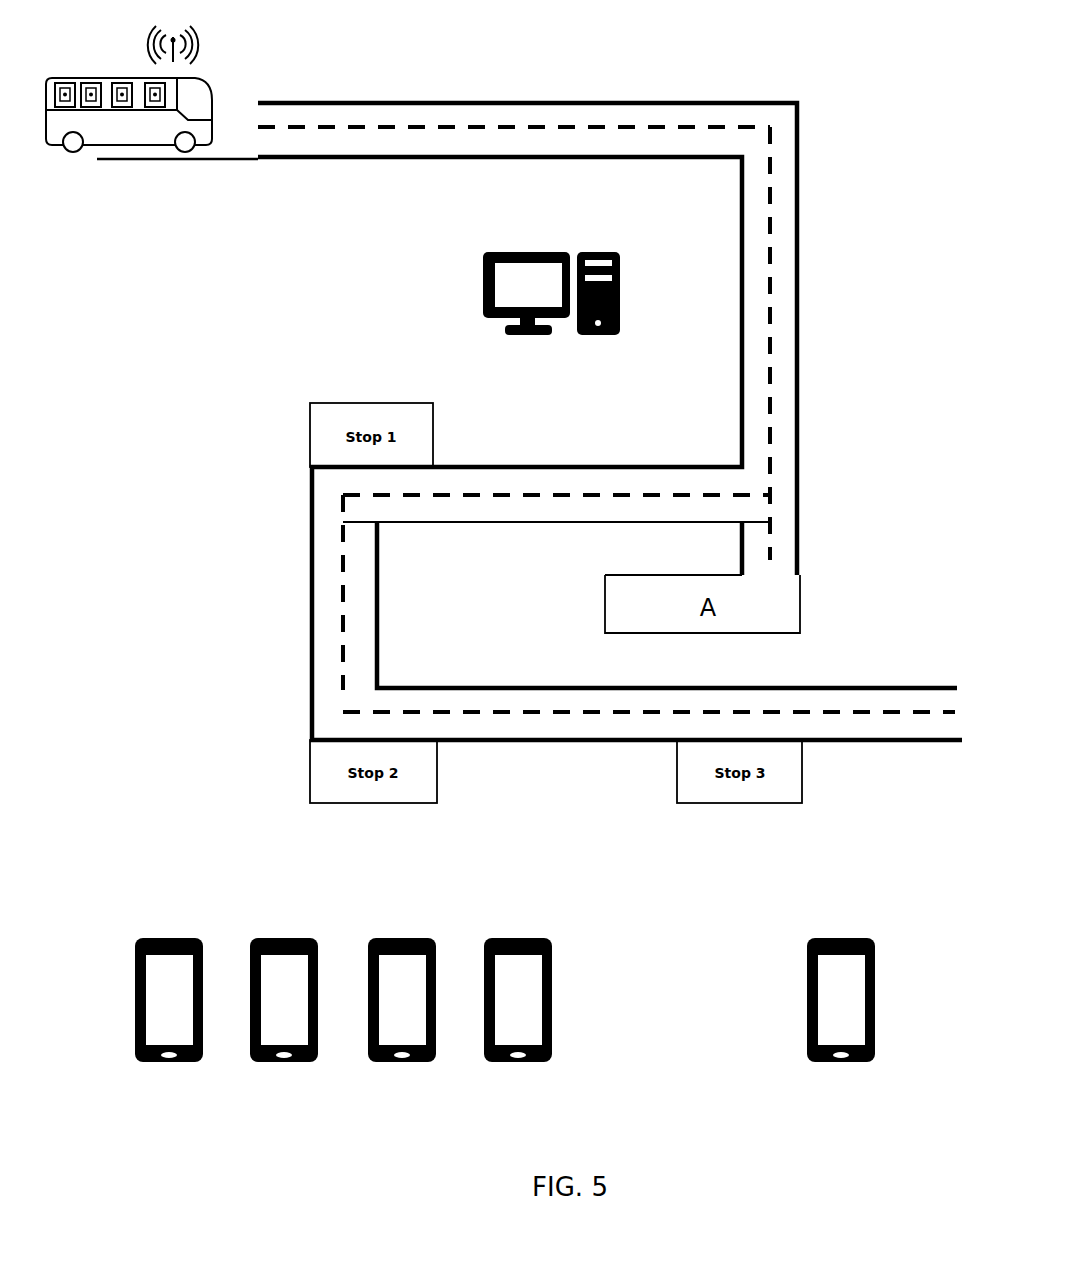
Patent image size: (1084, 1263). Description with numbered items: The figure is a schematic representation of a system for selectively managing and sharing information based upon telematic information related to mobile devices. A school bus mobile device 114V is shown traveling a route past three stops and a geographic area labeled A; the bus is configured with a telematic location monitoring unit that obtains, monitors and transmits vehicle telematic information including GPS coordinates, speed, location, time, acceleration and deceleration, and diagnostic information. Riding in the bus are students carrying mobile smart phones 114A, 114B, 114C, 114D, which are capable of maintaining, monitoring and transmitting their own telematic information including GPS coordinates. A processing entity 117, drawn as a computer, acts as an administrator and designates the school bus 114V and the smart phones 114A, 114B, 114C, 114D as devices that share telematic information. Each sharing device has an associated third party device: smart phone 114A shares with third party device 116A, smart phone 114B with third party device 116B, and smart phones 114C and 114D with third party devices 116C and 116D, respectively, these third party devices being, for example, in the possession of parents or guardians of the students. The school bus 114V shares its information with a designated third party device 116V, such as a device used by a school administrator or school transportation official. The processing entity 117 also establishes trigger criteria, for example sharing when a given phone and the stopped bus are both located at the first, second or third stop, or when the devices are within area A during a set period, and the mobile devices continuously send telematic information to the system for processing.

The school bus mobile device 114V is at (200, 79).
The mobile smart phone 114A is at (62, 108).
The mobile smart phone 114B is at (99, 108).
The mobile smart phone 114C is at (135, 108).
The mobile smart phone 114D is at (163, 108).
The processing entity 117 is at (604, 243).
The third party device 116A is at (169, 1017).
The third party device 116B is at (284, 1017).
The third party device 116C is at (402, 1017).
The third party device 116D is at (518, 1017).
The third party device 116V is at (841, 1017).